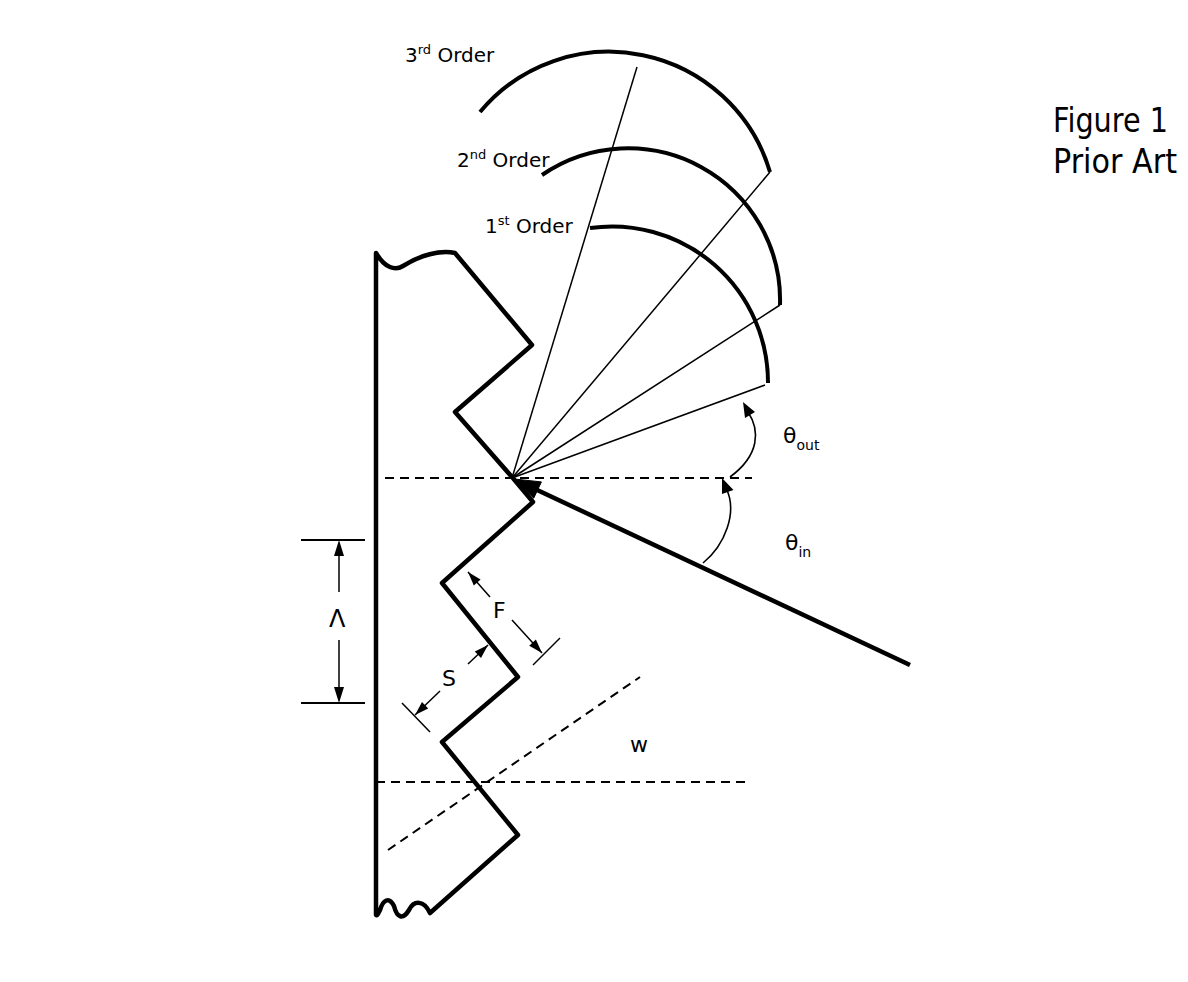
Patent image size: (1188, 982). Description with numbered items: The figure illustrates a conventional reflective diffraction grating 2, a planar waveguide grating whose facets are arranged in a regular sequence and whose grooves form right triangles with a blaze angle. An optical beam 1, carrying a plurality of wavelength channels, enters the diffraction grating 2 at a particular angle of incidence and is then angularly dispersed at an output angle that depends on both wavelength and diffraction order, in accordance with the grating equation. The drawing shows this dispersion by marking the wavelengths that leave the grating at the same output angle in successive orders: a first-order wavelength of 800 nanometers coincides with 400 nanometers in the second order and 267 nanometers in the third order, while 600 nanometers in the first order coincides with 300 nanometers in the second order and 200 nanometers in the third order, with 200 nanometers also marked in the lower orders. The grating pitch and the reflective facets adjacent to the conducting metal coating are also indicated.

The optical beam 1 is at (858, 635).
The diffraction grating 2 is at (405, 358).
The 267 nm third-order diffracted wavelength 267 is at (625, 247).
The 600 nm first-order diffracted wavelength 600 is at (641, 325).
The 300 nm second-order diffracted wavelength 300 is at (661, 226).
The 400 nm diffracted wavelength 400 is at (646, 299).
The 800 nm first-order diffracted wavelength 800 is at (658, 304).
The 200 nm diffracted wavelength 200 is at (696, 306).